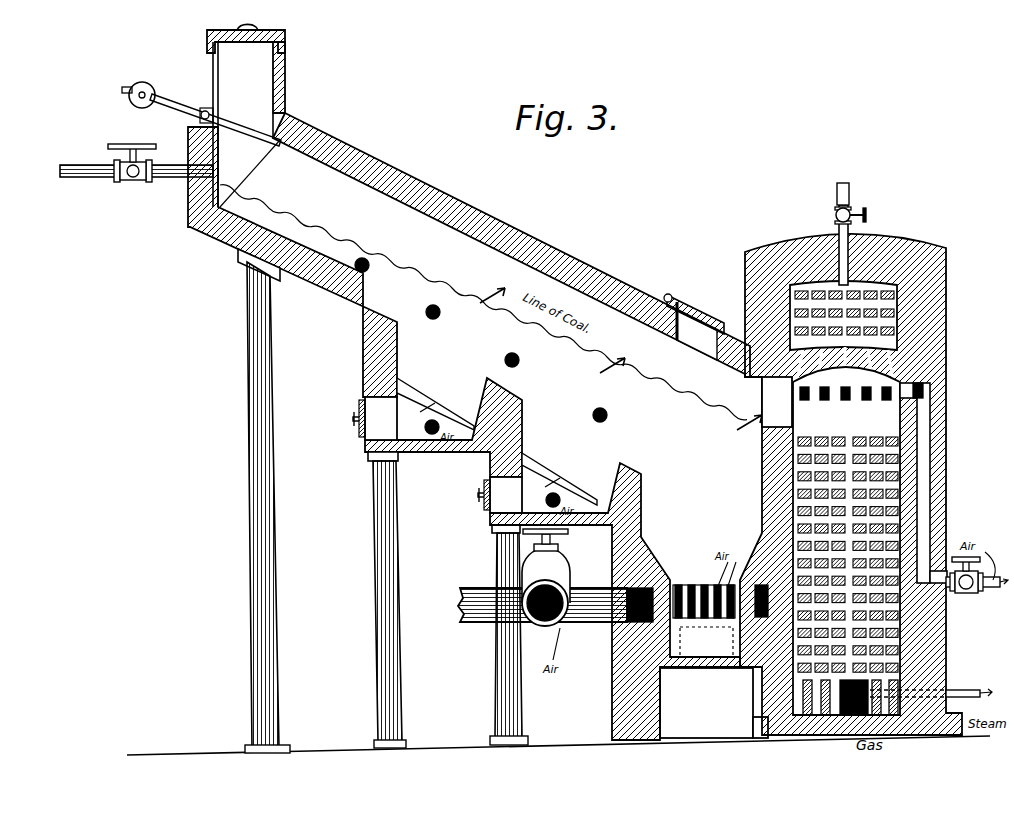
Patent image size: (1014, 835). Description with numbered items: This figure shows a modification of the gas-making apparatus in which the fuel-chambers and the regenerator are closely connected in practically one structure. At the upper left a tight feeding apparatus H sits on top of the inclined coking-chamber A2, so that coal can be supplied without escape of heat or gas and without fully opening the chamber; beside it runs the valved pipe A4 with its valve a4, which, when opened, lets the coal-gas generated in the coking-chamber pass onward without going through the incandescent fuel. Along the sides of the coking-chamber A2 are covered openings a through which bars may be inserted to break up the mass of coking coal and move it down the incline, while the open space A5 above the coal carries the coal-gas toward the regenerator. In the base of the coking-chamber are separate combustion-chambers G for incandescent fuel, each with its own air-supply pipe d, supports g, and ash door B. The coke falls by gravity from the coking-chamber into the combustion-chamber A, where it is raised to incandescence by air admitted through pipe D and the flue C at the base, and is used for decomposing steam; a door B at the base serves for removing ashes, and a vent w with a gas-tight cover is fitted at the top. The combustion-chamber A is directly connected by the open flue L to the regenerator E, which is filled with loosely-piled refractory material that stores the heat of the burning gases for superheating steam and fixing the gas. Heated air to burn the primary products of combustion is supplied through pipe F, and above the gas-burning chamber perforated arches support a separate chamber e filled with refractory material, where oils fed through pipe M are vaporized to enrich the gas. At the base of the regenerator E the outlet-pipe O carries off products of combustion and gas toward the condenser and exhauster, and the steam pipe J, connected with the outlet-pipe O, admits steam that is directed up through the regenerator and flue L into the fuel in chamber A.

The tight feeding apparatus H is at (227, 48).
The valved pipe A4 is at (80, 178).
The valve on air pipe a4 is at (133, 182).
The coking-chamber A2 is at (511, 245).
The open space above the coal A5 is at (695, 337).
The vent w is at (688, 300).
The openings a is at (372, 265).
The separate combustion-chamber G is at (497, 434).
The plate supports g is at (483, 455).
The air-supply pipe d is at (430, 434).
The door B is at (358, 422).
The combustion-chamber A is at (615, 601).
The open flue L is at (777, 402).
The separate chamber e is at (880, 321).
The regenerator E is at (846, 541).
The outlet-pipe O is at (845, 716).
The air pipe F is at (977, 589).
The steam pipe J is at (963, 690).
The oil pipe M is at (836, 190).
The flue C is at (586, 622).
The air pipe D is at (545, 626).